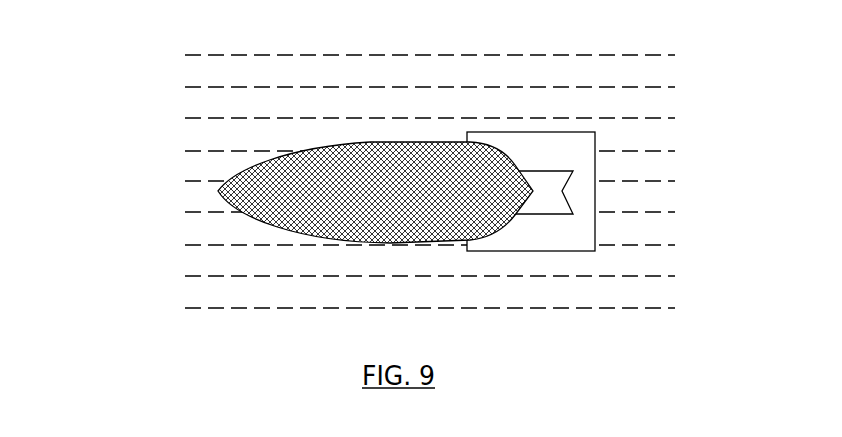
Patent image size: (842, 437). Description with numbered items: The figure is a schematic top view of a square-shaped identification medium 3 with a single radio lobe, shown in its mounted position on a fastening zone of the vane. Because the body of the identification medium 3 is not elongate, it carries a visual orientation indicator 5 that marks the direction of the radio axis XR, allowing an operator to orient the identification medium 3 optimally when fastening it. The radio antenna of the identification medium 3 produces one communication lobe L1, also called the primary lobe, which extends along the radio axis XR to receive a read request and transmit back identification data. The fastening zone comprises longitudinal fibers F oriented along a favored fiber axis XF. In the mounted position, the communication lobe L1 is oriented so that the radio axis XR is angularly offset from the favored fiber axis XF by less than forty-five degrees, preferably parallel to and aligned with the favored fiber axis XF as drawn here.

The identification medium 3 is at (533, 132).
The visual orientation indicator 5 is at (557, 213).
The communication lobe L1 is at (368, 142).
The longitudinal fibers F is at (668, 55).
The favored fiber axis XF is at (428, 309).
The radio axis XR is at (164, 197).